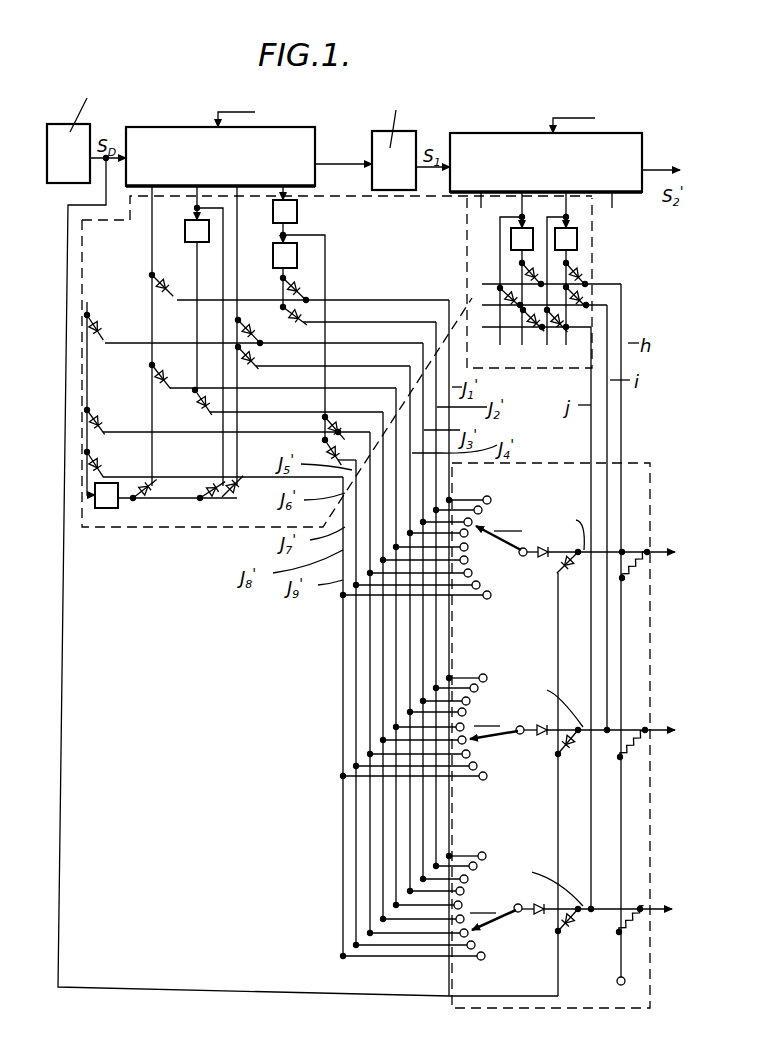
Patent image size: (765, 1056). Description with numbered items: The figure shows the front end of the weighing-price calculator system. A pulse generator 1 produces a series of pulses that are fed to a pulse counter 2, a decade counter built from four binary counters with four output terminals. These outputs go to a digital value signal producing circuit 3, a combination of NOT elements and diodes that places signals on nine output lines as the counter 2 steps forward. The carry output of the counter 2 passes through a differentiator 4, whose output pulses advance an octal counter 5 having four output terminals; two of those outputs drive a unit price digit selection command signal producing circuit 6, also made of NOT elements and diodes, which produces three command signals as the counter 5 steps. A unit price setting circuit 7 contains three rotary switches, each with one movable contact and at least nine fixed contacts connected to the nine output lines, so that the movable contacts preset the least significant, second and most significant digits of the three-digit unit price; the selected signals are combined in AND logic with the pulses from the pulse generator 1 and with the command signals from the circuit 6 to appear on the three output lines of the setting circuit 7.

The pulse generator 1 is at (60, 184).
The pulse counter 2 is at (206, 127).
The digital value signal producing circuit 3 is at (200, 528).
The differentiator 4 is at (372, 144).
The octal counter 5 is at (537, 133).
The unit price digit selection command signal producing circuit 6 is at (592, 252).
The unit price setting circuit 7 is at (512, 1008).